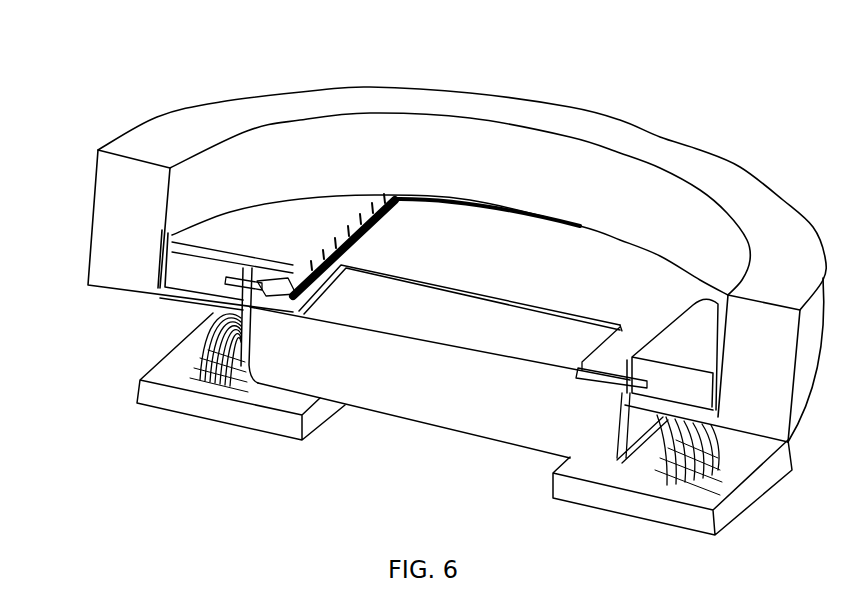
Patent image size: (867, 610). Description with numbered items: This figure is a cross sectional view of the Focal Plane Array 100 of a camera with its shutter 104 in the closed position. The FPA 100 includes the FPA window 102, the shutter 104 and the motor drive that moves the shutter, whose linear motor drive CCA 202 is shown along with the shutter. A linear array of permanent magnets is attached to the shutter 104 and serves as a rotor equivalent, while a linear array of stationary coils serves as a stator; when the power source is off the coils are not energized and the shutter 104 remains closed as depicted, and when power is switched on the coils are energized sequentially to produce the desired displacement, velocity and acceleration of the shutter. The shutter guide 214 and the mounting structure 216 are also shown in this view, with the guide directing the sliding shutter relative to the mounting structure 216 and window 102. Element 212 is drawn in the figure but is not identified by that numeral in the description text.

The Focal Plane Array 100 is at (673, 85).
The FPA window 102 is at (440, 313).
The shutter 104 is at (575, 253).
The linear motor drive CCA 202 is at (293, 212).
The housing ring cut face 212 is at (115, 270).
The shutter guide 214 is at (693, 330).
The mounting structure 216 is at (738, 183).